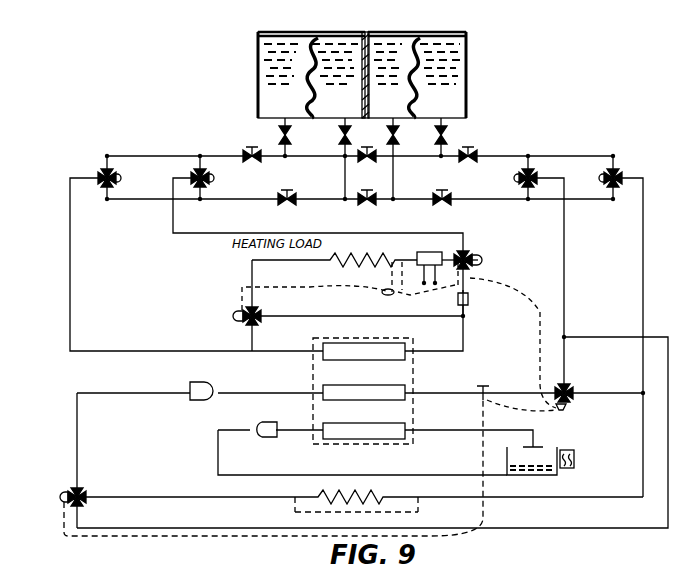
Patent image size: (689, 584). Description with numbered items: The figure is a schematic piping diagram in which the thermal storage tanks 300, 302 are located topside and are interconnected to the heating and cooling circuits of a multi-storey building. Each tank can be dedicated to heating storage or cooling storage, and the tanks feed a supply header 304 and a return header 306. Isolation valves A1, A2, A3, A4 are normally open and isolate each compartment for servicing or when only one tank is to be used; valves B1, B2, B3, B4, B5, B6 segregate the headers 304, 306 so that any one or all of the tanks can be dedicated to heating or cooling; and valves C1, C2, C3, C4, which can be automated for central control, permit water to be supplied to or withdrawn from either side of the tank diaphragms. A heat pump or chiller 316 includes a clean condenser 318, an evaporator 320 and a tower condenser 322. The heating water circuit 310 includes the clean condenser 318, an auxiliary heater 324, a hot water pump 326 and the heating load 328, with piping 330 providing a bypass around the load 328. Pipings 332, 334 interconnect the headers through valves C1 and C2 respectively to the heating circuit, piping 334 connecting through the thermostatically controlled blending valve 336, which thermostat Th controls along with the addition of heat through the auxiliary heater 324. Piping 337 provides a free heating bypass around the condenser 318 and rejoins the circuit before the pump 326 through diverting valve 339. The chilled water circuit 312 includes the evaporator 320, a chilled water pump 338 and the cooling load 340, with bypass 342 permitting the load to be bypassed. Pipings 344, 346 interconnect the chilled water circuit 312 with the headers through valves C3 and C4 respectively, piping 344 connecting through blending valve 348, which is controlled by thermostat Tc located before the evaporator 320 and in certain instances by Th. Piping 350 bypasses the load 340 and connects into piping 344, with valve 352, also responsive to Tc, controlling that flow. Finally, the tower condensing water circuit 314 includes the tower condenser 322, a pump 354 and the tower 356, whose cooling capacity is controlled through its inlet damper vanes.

The storage tank 300 is at (309, 32).
The storage tank 302 is at (436, 30).
The supply header 304 is at (158, 156).
The return header 306 is at (140, 200).
The heating water circuit 310 is at (211, 276).
The chilled water circuit 312 is at (230, 375).
The tower condensing water circuit 314 is at (211, 452).
The heat pump or chiller 316 is at (414, 378).
The clean condenser 318 is at (388, 344).
The evaporator 320 is at (330, 393).
The tower condenser 322 is at (348, 432).
The auxiliary heater 324 is at (416, 252).
The hot water pump 326 is at (472, 299).
The heating load 328 is at (334, 268).
The bypass piping 330 is at (318, 278).
The piping 332 is at (70, 290).
The piping 334 is at (206, 232).
The thermostatically controlled blending valve 336 is at (510, 244).
The free heating bypass piping 337 is at (306, 306).
The chilled water pump 338 is at (198, 400).
The diverting valve 339 is at (238, 306).
The cooling load 340 is at (318, 494).
The bypass 342 is at (295, 515).
The piping 344 is at (564, 327).
The piping 346 is at (643, 327).
The thermostatically controlled blending valve 348 is at (568, 408).
The bypass piping 350 is at (522, 534).
The valve 352 is at (63, 502).
The pump 354 is at (258, 437).
The tower 356 is at (556, 472).
The isolation valve A1 is at (278, 138).
The isolation valve A2 is at (338, 159).
The isolation valve A3 is at (386, 159).
The isolation valve A4 is at (434, 138).
The header segregating valve B1 is at (244, 147).
The header segregating valve B2 is at (279, 190).
The header segregating valve B3 is at (362, 165).
The header segregating valve B4 is at (386, 186).
The header segregating valve B5 is at (476, 150).
The header segregating valve B6 is at (458, 190).
The automatable control valve C1 is at (119, 179).
The automatable control valve C2 is at (212, 179).
The automatable control valve C3 is at (514, 179).
The automatable control valve C4 is at (599, 179).